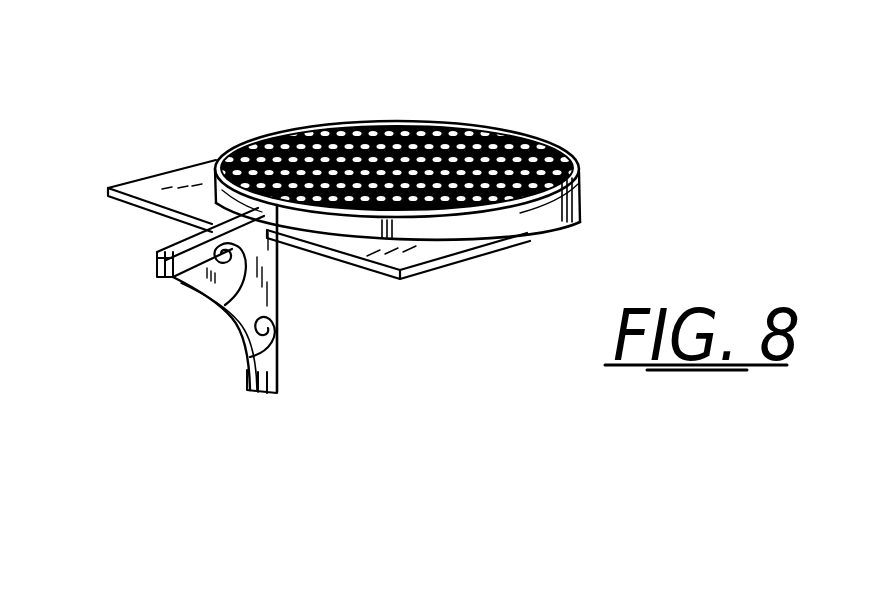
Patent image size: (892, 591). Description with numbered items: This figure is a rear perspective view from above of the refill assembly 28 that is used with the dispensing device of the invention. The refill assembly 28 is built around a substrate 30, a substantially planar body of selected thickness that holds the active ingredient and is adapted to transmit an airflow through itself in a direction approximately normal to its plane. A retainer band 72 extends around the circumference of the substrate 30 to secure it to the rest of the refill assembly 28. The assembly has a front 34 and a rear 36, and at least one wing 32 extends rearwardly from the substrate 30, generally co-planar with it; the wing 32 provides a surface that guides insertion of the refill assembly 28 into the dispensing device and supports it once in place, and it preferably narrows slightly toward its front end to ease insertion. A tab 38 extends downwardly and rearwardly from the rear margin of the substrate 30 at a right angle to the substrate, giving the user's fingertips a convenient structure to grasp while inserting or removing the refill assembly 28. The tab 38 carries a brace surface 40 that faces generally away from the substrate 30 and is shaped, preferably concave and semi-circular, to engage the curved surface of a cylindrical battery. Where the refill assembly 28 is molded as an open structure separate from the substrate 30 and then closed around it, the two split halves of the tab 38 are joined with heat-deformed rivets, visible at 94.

The refill assembly 28 is at (513, 130).
The substrate 30 is at (379, 120).
The wing 32 is at (168, 186).
The front 34 is at (457, 125).
The rear 36 is at (157, 261).
The tab 38 is at (267, 290).
The brace surface 40 is at (252, 388).
The retainer band 72 is at (562, 212).
The heat-deformed rivets 94 is at (245, 362).